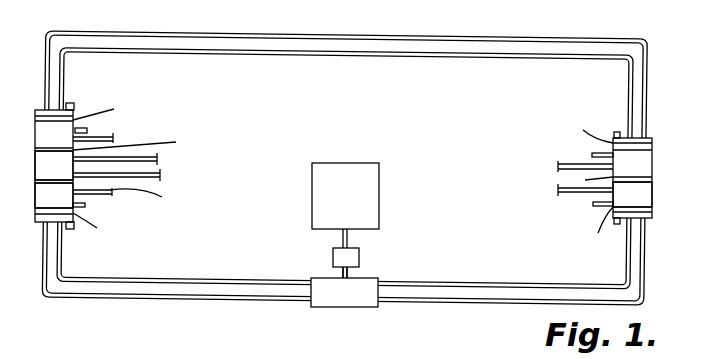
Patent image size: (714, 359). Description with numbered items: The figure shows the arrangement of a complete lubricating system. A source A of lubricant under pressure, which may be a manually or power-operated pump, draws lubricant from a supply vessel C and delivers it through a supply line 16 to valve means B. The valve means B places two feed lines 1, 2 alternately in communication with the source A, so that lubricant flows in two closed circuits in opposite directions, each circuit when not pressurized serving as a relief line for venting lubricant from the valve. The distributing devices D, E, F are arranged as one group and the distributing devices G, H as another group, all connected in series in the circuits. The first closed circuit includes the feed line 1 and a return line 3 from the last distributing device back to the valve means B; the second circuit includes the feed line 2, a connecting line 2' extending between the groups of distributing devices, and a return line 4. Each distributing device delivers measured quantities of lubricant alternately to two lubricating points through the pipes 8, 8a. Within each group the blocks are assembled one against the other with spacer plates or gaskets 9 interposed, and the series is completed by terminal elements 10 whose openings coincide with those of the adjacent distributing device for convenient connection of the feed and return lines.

The feed line 1 is at (400, 56).
The feed line 2 is at (344, 195).
The connecting line 2' is at (346, 35).
The return line 3 is at (494, 285).
The return line 4 is at (232, 300).
The pipe 8 is at (114, 135).
The pipe 8a is at (87, 130).
The spacer plate or gasket 9 is at (343, 173).
The terminal element 10 is at (73, 112).
The supply line 16 is at (352, 273).
The source of lubricant under pressure A is at (362, 258).
The valve means B is at (344, 292).
The supply vessel C is at (345, 196).
The distributing device D is at (54, 195).
The distributing device E is at (54, 165).
The distributing device F is at (54, 166).
The distributing device G is at (632, 178).
The distributing device H is at (632, 194).